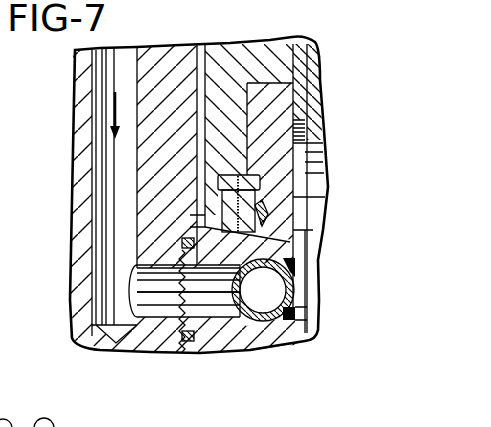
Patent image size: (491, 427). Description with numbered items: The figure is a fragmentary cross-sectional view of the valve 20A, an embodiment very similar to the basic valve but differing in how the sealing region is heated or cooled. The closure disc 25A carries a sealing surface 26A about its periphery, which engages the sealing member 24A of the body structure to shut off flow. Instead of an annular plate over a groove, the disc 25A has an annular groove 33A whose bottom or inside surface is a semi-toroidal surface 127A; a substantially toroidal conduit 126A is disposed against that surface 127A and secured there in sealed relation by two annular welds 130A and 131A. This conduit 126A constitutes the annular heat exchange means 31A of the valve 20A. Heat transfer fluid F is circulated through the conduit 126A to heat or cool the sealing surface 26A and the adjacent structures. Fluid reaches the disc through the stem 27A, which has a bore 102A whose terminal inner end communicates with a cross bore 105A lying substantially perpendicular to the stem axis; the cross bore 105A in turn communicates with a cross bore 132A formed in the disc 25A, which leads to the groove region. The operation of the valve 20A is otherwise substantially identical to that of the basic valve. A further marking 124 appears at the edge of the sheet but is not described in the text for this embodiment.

The valve 20A is at (68, 92).
The stem 27A is at (76, 188).
The heat transfer fluid F is at (113, 120).
The bore 102A is at (131, 52).
The annular weld 130A is at (303, 253).
The toroidal conduit 126A is at (314, 283).
The sealing member 24A is at (226, 183).
The sealing surface 26A is at (262, 212).
The cross bore 105A is at (164, 307).
The semi-toroidal surface 127A is at (231, 308).
The closure disc 25A is at (219, 352).
The cross bore 132A is at (204, 307).
The annular heat exchange means 31A is at (308, 290).
The annular weld 131A is at (298, 316).
The annular groove 33A is at (268, 346).
The adjacent figure numeral 124 is at (331, 418).